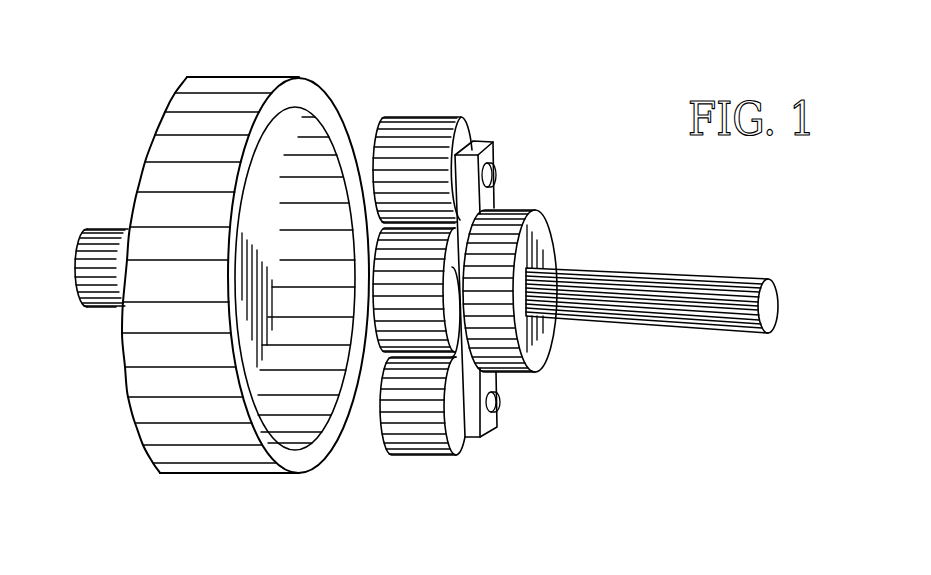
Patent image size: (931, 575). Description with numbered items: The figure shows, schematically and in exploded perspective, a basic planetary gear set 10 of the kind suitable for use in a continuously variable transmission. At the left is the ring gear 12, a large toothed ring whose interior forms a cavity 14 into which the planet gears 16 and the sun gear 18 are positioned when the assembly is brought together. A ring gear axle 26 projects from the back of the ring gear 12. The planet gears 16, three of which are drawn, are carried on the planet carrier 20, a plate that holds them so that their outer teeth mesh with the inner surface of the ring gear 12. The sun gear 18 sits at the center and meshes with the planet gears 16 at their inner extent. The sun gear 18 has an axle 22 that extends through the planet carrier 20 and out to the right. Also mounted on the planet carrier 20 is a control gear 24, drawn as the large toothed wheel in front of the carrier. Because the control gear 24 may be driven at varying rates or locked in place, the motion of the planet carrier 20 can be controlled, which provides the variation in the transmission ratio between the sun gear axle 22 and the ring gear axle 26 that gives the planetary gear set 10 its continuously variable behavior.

The planetary gear set 10 is at (100, 477).
The ring gear 12 is at (218, 453).
The cavity 14 is at (263, 190).
The planet gears 16 is at (417, 128).
The sun gear 18 is at (423, 313).
The planet carrier 20 is at (490, 157).
The axle 22 is at (663, 327).
The control gear 24 is at (510, 222).
The ring gear axle 26 is at (102, 297).